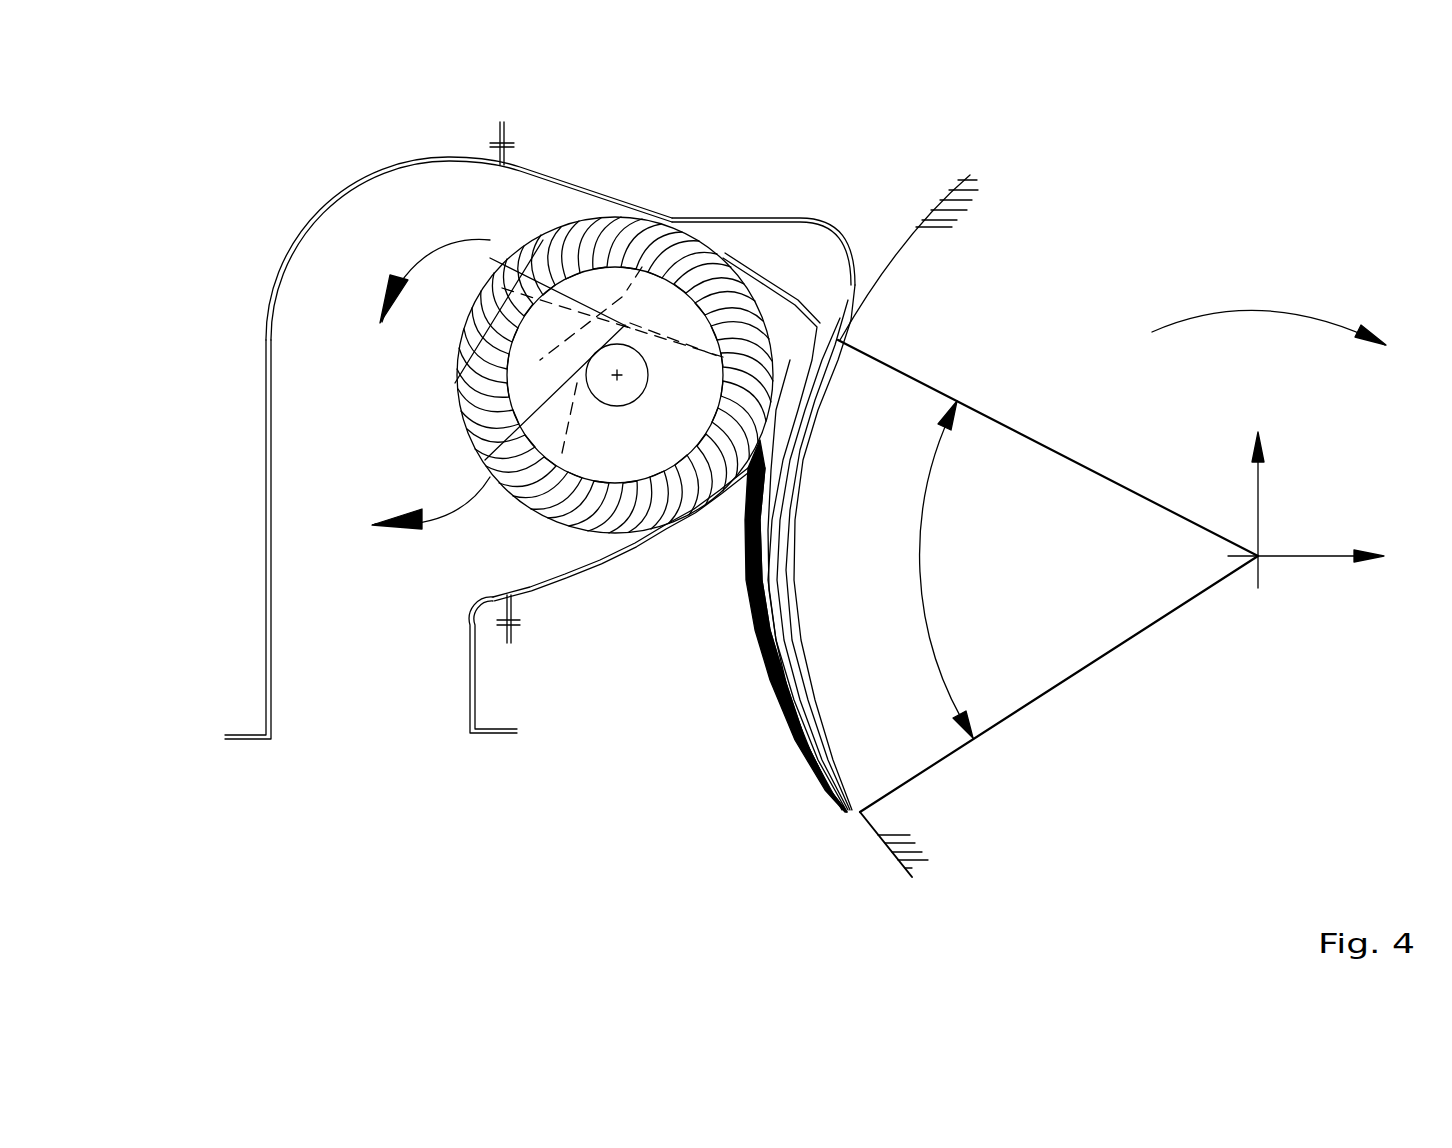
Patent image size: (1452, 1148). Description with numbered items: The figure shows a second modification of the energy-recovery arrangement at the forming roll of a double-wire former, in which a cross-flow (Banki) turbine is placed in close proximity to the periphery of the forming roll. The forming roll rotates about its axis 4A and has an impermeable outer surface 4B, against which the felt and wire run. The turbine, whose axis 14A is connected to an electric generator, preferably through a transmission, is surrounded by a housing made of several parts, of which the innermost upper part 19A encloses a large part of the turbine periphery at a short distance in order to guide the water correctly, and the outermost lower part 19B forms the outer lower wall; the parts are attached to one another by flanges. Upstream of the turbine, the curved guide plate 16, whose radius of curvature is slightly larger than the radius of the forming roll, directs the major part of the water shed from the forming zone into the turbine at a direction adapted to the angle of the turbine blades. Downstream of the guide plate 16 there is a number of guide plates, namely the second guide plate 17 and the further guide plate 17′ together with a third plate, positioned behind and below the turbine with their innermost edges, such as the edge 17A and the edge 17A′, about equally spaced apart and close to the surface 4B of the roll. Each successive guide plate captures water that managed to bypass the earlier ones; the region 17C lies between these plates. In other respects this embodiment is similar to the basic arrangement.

The innermost upper part 19A is at (555, 178).
The outermost lower part 19B is at (265, 340).
The guide plate 17′ is at (853, 300).
The second guide plate 17 is at (798, 382).
The edge 17A is at (800, 420).
The innermost edge 17A′ is at (838, 356).
The nozzle channel 17C is at (793, 483).
The guide plate 16 is at (757, 622).
The axis 14A is at (612, 388).
The axis 4A is at (1262, 560).
The outer surface 4B is at (883, 845).